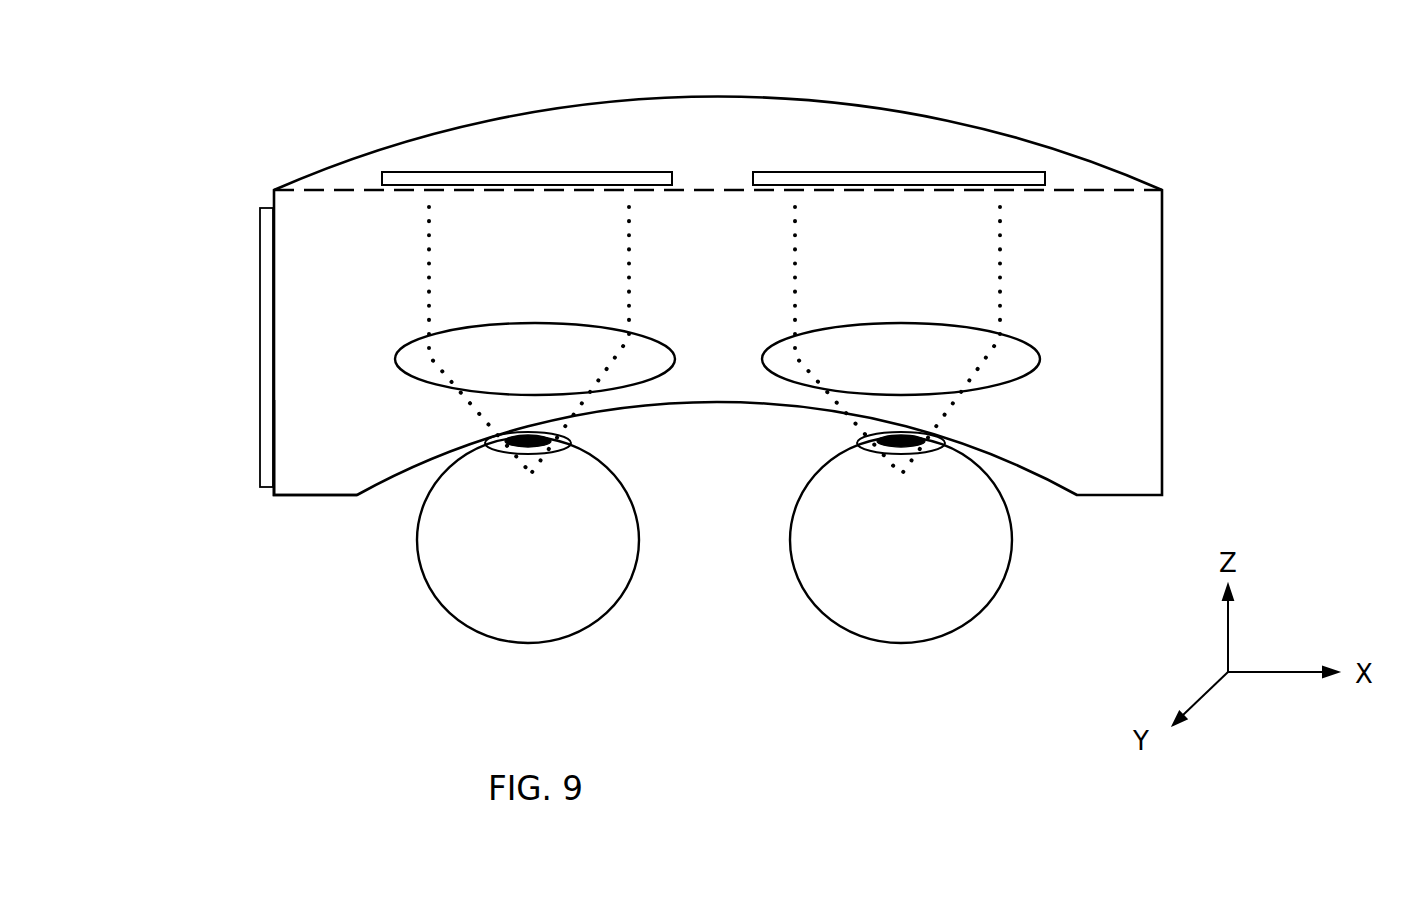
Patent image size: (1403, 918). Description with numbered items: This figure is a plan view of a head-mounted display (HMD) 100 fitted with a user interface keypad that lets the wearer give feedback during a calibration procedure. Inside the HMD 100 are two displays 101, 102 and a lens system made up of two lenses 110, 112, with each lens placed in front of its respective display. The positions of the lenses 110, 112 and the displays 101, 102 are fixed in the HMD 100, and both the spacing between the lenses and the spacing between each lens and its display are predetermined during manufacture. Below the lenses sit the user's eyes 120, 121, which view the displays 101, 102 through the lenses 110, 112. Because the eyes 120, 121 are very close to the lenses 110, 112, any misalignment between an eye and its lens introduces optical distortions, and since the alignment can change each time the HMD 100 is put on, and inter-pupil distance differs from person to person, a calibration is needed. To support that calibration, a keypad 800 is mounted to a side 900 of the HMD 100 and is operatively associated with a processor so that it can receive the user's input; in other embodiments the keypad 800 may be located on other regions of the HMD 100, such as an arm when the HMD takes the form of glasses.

The head-mounted display (HMD) 100 is at (708, 73).
The display 101 is at (426, 172).
The display 102 is at (944, 172).
The lens 110 is at (396, 356).
The lens 112 is at (1038, 358).
The user's eye 120 is at (562, 630).
The user's eye 121 is at (908, 630).
The keypad 800 is at (266, 305).
The side 900 is at (277, 441).